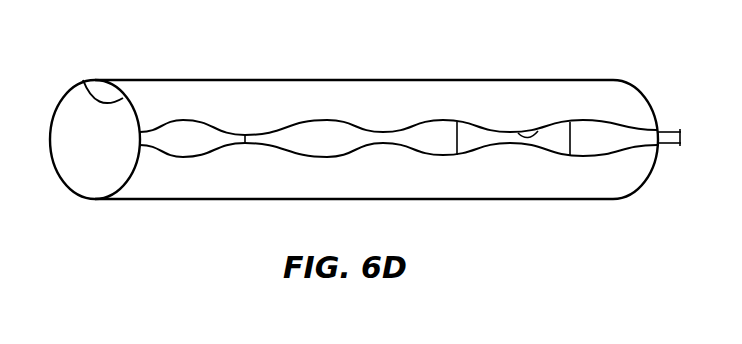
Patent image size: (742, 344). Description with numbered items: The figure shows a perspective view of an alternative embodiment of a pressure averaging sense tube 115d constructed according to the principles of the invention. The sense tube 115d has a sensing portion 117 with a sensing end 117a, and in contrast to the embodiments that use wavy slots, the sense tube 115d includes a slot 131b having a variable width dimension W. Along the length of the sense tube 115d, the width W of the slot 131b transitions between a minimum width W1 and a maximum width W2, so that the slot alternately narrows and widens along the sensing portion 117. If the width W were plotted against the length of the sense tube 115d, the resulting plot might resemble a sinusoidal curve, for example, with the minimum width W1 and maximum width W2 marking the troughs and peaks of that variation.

The pressure averaging sense tube 115d is at (386, 133).
The sensing portion 117 is at (345, 92).
The sensing end 117a is at (83, 80).
The slot 131b is at (545, 128).
The minimum width W1 is at (250, 138).
The maximum width W2 is at (458, 137).
The width dimension W is at (683, 136).